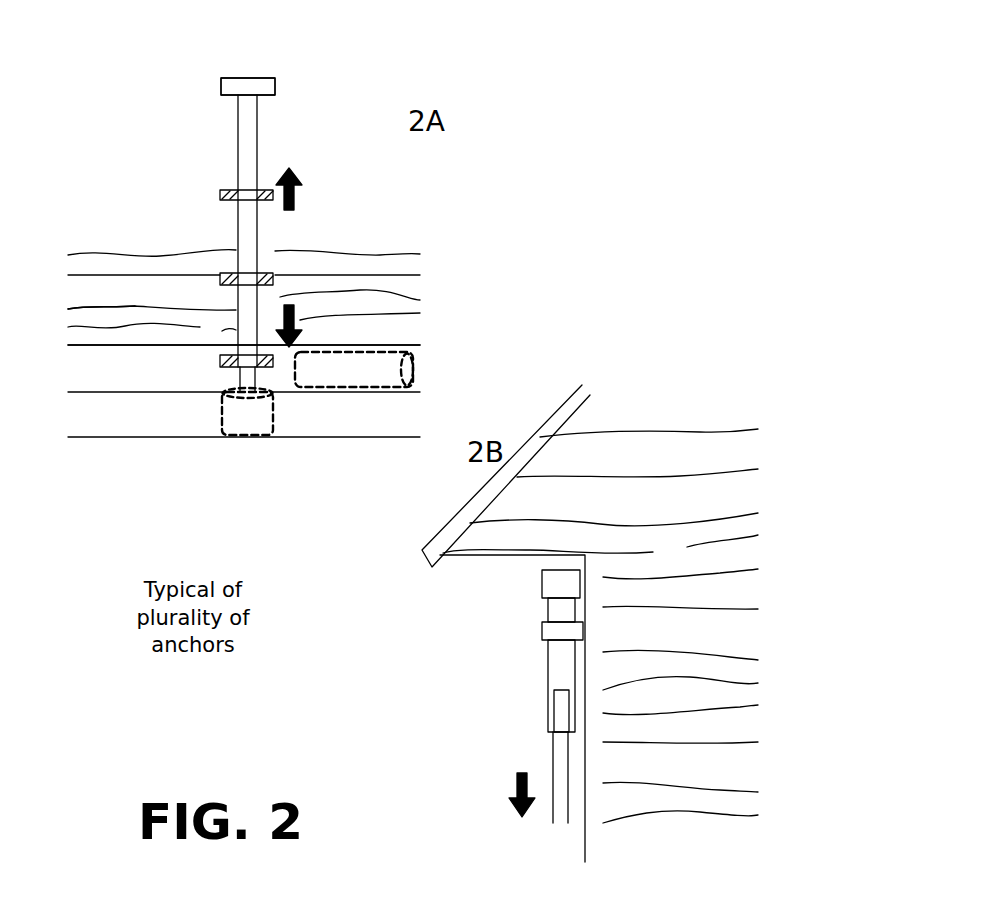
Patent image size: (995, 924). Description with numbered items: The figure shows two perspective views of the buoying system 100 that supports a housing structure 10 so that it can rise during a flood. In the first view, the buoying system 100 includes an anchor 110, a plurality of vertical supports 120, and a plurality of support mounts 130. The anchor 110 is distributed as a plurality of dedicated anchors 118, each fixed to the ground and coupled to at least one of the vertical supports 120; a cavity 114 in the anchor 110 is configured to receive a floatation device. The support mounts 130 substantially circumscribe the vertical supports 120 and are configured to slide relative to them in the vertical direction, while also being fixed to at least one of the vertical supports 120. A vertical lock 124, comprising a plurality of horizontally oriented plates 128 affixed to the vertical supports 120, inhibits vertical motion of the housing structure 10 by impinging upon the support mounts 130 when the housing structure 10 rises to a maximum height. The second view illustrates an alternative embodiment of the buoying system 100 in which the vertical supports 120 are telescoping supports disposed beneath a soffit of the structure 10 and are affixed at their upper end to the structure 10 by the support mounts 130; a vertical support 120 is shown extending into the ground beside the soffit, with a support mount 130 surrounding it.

In FIG. 2A, the buoying system 100 is at (482, 60).
In FIG. 2A, the housing structure 10 is at (336, 290).
In FIG. 2B, the housing structure 10 is at (602, 523).
In FIG. 2A, the anchor 110 is at (158, 366).
In FIG. 2A, the cavity 114 is at (358, 338).
In FIG. 2A, the dedicated anchors 118 is at (249, 445).
In FIG. 2A, the vertical supports 120 is at (175, 309).
In FIG. 2B, the vertical supports 120 is at (547, 714).
In FIG. 2A, the vertical lock 124 is at (198, 76).
In FIG. 2A, the horizontally oriented plates 128 is at (298, 86).
In FIG. 2A, the support mounts 130 is at (220, 197).
In FIG. 2B, the support mounts 130 is at (530, 634).